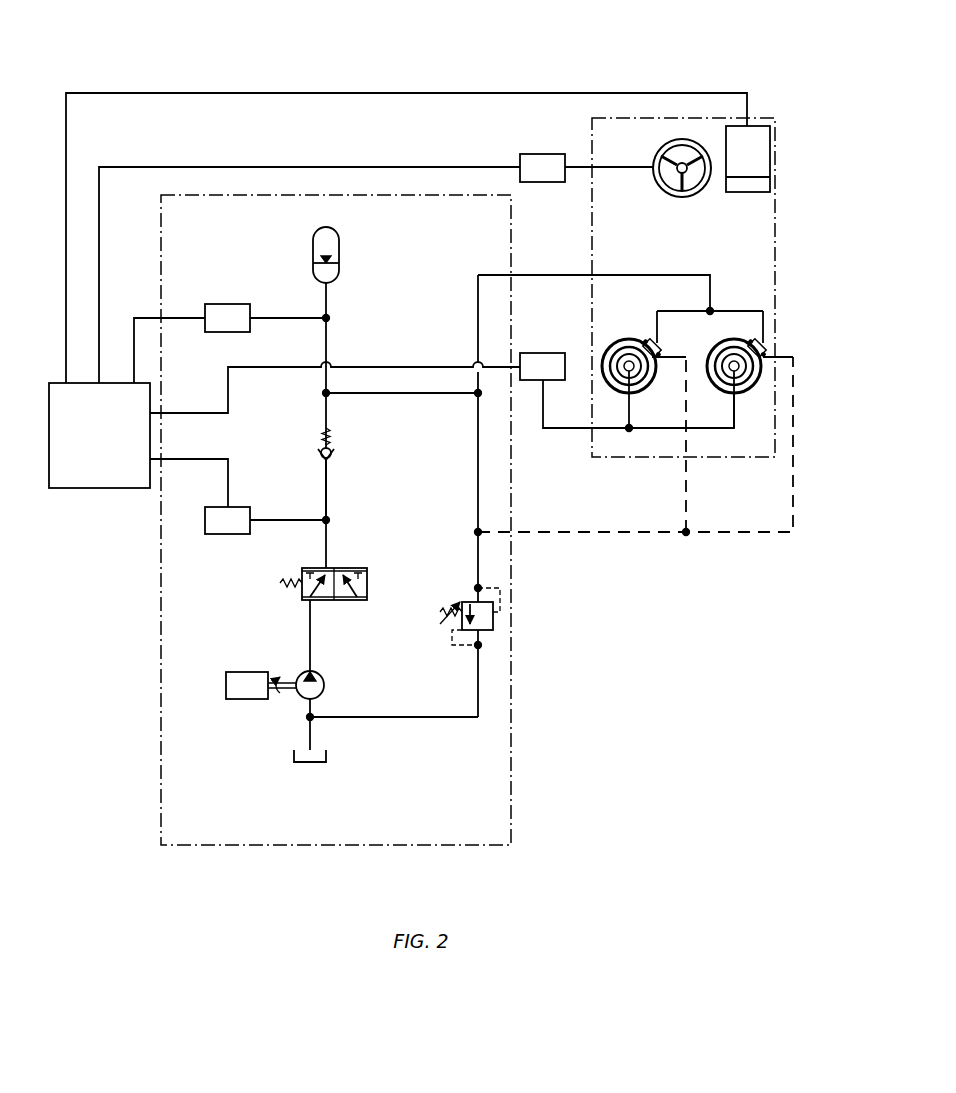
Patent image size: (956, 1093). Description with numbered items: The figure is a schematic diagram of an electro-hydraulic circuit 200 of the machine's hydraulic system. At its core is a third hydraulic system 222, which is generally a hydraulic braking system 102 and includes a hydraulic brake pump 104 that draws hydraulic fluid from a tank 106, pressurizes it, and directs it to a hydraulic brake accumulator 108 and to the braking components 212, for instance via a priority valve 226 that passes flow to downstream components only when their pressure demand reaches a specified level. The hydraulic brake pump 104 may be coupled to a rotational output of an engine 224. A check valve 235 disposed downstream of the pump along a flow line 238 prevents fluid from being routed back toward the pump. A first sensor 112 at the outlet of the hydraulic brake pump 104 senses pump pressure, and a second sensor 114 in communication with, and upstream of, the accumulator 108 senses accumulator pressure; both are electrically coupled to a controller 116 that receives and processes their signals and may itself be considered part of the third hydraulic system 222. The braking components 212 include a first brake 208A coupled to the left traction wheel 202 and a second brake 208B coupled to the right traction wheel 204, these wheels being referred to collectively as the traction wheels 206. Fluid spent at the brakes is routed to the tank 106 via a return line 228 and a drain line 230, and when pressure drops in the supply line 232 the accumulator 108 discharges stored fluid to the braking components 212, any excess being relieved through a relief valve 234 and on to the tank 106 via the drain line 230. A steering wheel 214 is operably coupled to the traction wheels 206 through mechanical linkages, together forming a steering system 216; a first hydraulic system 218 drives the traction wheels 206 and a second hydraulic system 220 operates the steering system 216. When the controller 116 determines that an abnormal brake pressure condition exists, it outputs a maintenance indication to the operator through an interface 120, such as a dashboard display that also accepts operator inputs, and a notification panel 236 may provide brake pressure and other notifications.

The electro-hydraulic circuit 200 is at (104, 52).
The hydraulic braking system 102 is at (777, 122).
The hydraulic brake pump 104 is at (326, 686).
The tank 106 is at (310, 770).
The hydraulic brake accumulator 108 is at (340, 240).
The first sensor 112 is at (227, 520).
The second sensor 114 is at (227, 318).
The controller 116 is at (99, 435).
The interface 120 is at (748, 159).
The left traction wheel 202 is at (622, 392).
The right traction wheel 204 is at (760, 383).
The traction wheels 206 is at (702, 405).
The first brake 208A is at (650, 343).
The second brake 208B is at (767, 355).
The braking components 212 is at (746, 326).
The steering wheel 214 is at (682, 139).
The steering system 216 is at (718, 202).
The first hydraulic system 218 is at (627, 392).
The second hydraulic system 220 is at (542, 168).
The third hydraulic system 222 is at (513, 735).
The engine 224 is at (261, 685).
The priority valve 226 is at (300, 590).
The return line 228 is at (651, 533).
The drain line 230 is at (430, 717).
The supply line 232 is at (543, 275).
The relief valve 234 is at (495, 622).
The check valve 235 is at (337, 453).
The notification panel 236 is at (770, 185).
The flow line 238 is at (328, 494).